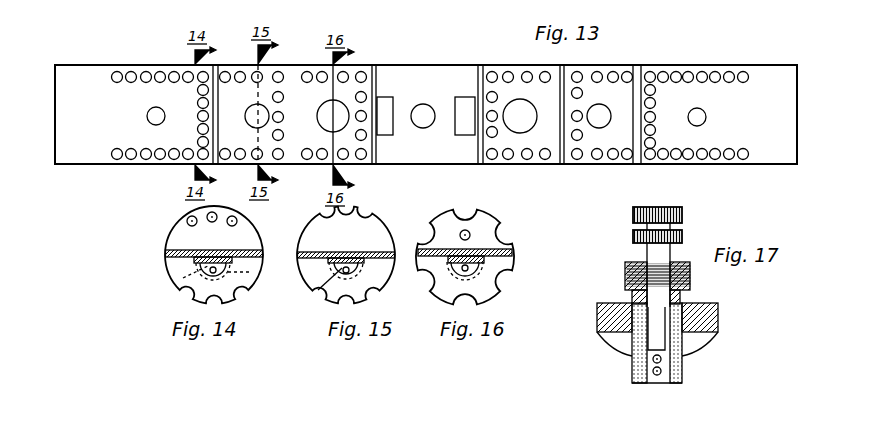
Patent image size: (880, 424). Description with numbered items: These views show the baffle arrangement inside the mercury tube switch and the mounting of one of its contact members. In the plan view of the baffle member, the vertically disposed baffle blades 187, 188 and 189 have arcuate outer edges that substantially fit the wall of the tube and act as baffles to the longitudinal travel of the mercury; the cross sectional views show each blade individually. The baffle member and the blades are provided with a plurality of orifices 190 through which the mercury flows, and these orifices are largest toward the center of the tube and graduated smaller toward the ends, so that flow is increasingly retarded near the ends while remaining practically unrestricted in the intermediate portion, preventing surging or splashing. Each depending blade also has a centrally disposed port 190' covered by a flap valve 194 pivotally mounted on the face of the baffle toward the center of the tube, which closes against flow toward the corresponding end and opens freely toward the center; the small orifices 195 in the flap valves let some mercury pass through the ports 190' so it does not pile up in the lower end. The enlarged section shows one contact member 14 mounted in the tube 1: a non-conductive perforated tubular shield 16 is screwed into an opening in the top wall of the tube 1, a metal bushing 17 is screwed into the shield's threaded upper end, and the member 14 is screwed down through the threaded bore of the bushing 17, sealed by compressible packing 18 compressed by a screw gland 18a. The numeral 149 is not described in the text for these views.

In FIG. 13, the orifices 190 is at (412, 118).
In FIG. 14, the orifices 190 is at (191, 261).
In FIG. 15, the orifices 190 is at (348, 253).
In FIG. 16, the orifices 190 is at (466, 265).
In FIG. 14, the centrally disposed port 190' is at (166, 282).
In FIG. 16, the centrally disposed port 190' is at (494, 276).
In FIG. 14, the baffle blade 187 is at (180, 234).
In FIG. 15, the baffle blade 188 is at (313, 225).
In FIG. 16, the baffle blade 189 is at (446, 213).
In FIG. 14, the flap valve 194 is at (256, 262).
In FIG. 16, the flap valve 194 is at (516, 260).
In FIG. 14, the small orifices 195 is at (218, 277).
In FIG. 16, the small orifices 195 is at (465, 272).
In FIG. 15, the element 149 is at (272, 423).
In FIG. 17, the screw gland 18a is at (687, 262).
In FIG. 17, the compressible packing 18 is at (690, 280).
In FIG. 17, the metal bushing 17 is at (682, 296).
In FIG. 17, the tube 1 is at (718, 319).
In FIG. 17, the contact member 14 is at (652, 344).
In FIG. 17, the tubular shield 16 is at (683, 370).